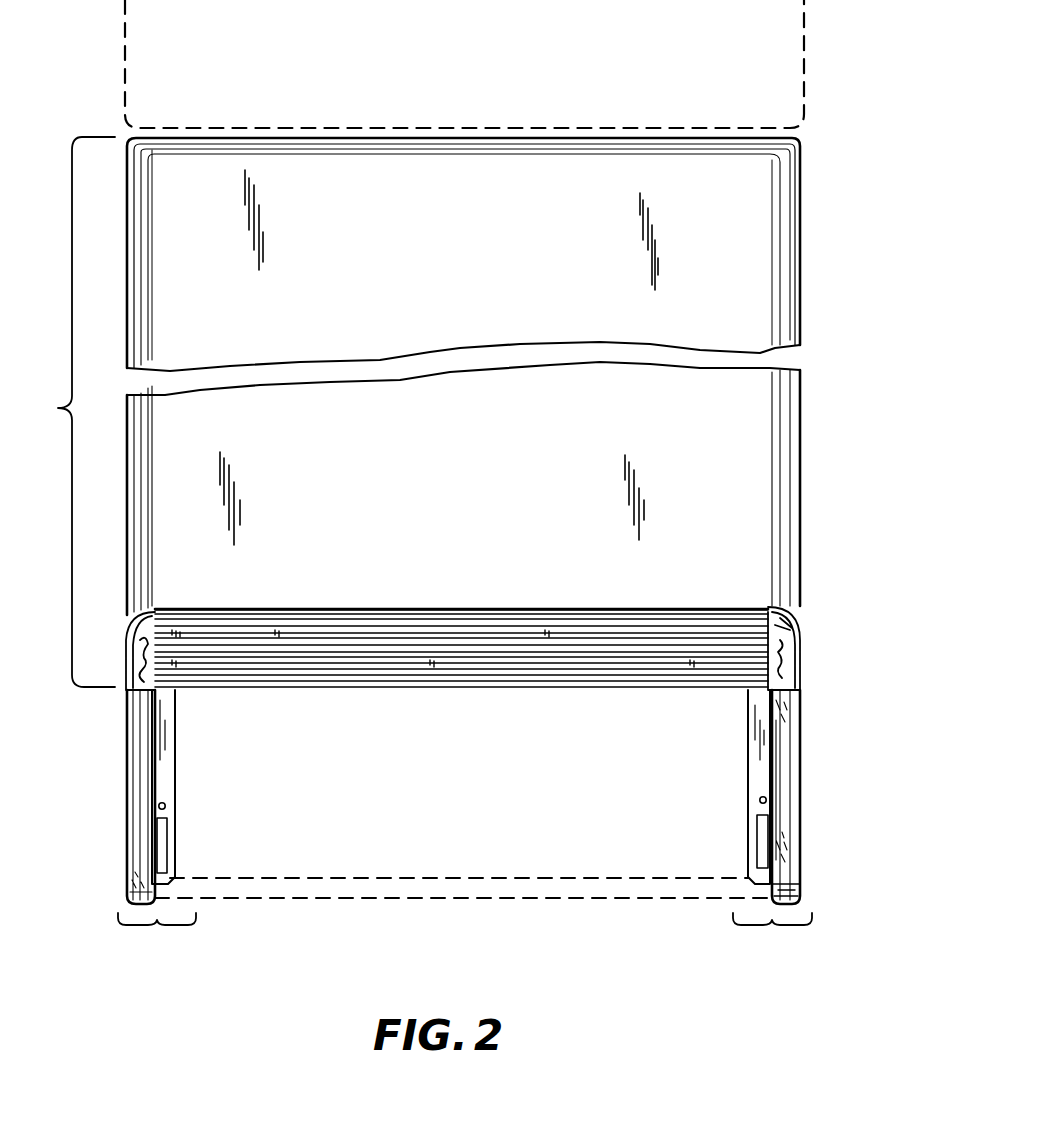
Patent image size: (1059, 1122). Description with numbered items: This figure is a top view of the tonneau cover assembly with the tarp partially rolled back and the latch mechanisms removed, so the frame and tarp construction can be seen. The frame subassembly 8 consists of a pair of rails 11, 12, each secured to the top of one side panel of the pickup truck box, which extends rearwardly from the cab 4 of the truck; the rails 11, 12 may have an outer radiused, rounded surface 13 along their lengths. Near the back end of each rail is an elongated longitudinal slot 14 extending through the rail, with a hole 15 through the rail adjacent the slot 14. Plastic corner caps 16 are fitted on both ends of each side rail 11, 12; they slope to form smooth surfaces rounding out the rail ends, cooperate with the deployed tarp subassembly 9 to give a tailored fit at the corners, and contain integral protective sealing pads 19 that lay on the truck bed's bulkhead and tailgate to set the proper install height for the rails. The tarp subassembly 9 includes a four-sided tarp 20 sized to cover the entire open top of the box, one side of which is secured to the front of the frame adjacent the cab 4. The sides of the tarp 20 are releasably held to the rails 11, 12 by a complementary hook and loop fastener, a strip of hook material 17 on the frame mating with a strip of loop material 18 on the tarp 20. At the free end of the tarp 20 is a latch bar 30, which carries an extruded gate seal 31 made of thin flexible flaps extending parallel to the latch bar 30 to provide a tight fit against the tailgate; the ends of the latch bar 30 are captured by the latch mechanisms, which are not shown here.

The cab 4 is at (772, 45).
The frame subassembly 8 is at (465, 937).
The tarp subassembly 9 is at (73, 412).
The rail 11 is at (167, 750).
The rail 12 is at (748, 733).
The outer radiused, rounded surface 13 is at (135, 788).
The elongated longitudinal slot 14 is at (762, 833).
The hole 15 is at (760, 798).
The corner cap 16 is at (795, 897).
The strip of hook material 17 is at (803, 702).
The strip of loop material 18 is at (797, 650).
The sealing pad 19 is at (800, 888).
The tarp 20 is at (748, 260).
The latch bar 30 is at (487, 645).
The extruded gate seal 31 is at (690, 612).